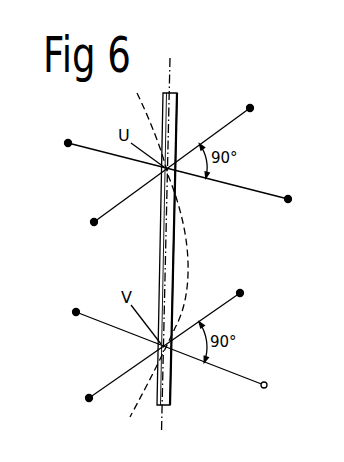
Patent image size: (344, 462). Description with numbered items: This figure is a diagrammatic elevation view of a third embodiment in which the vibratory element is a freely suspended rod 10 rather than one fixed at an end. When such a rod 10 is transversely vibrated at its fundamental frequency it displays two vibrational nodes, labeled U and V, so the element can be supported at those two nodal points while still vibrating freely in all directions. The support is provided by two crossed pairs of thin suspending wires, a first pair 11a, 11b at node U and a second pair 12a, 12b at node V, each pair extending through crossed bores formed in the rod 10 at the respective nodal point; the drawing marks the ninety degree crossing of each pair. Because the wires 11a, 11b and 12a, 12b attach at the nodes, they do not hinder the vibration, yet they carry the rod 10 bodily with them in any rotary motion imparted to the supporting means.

The rod 10 is at (162, 246).
The suspending wire 11a is at (220, 131).
The suspending wire 11b is at (232, 188).
The suspending wire 12a is at (220, 308).
The suspending wire 12b is at (217, 368).